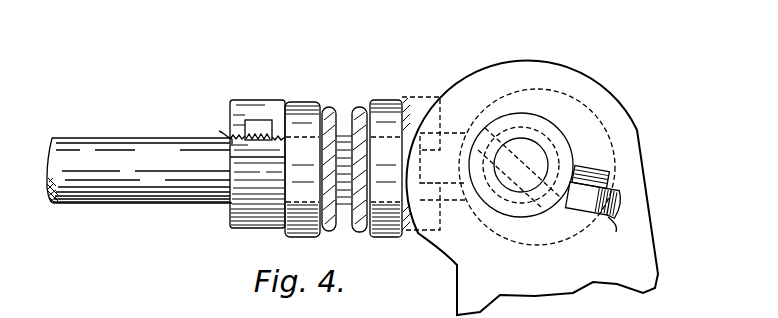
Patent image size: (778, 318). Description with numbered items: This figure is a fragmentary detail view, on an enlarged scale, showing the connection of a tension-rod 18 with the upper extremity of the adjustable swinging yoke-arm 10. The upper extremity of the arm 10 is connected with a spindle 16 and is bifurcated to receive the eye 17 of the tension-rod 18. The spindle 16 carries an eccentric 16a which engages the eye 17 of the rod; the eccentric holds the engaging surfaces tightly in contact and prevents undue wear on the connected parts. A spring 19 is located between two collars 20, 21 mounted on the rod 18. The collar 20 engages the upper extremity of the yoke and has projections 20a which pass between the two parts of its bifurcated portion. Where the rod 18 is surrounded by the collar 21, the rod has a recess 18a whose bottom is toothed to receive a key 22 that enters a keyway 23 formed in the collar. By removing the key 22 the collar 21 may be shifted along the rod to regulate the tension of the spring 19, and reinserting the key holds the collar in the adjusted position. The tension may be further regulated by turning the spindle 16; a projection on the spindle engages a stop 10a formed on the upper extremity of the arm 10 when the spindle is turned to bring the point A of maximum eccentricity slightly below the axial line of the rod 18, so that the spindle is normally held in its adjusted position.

The arm 10 is at (645, 246).
The stop 10a is at (585, 205).
The spindle 16 is at (523, 144).
The eccentric 16a is at (583, 103).
The eye 17 is at (577, 157).
The point of maximum eccentricity A is at (605, 165).
The tension-rod 18 is at (90, 147).
The recess 18a is at (232, 137).
The spring 19 is at (330, 110).
The collar 20 is at (388, 98).
The projections 20a is at (433, 97).
The collar 21 is at (304, 102).
The key 22 is at (259, 121).
The keyway 23 is at (245, 128).